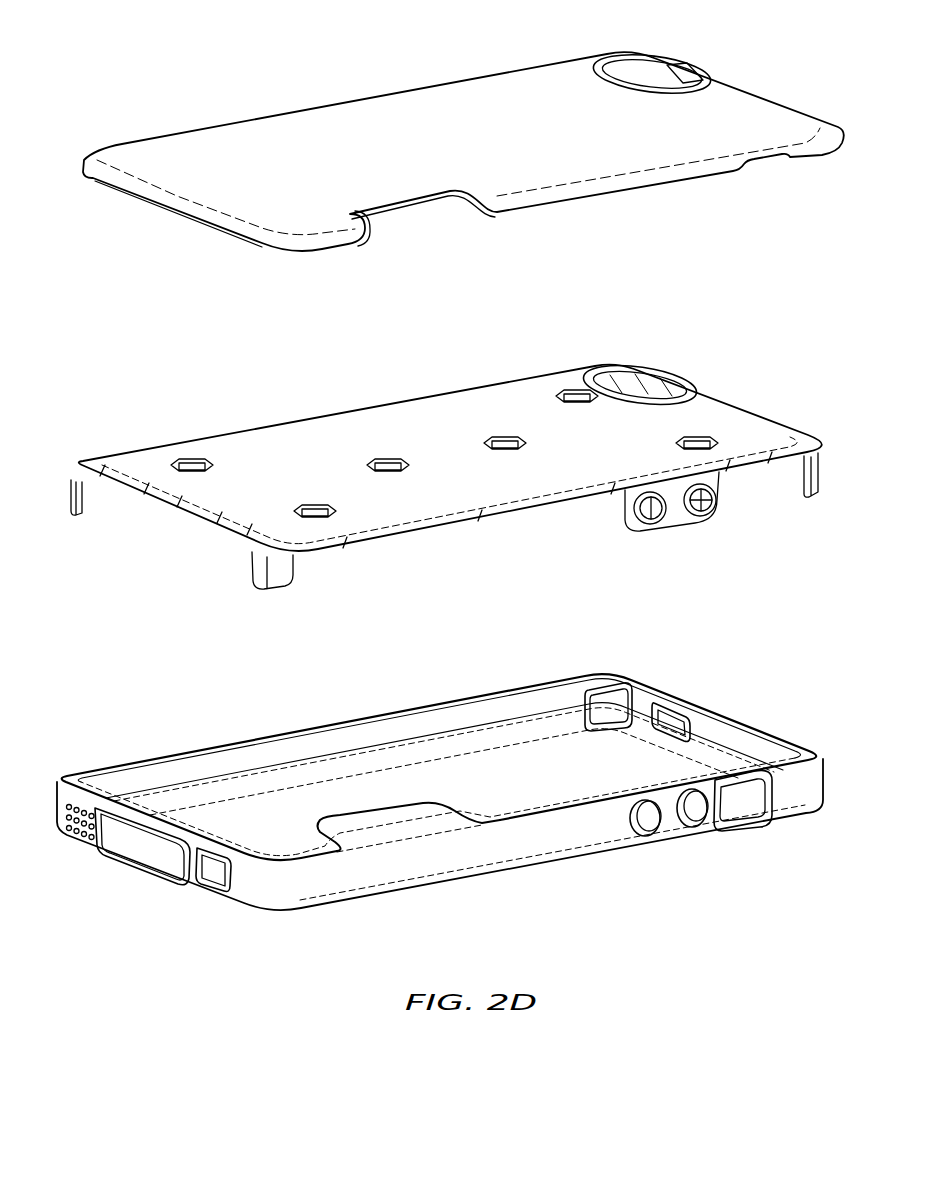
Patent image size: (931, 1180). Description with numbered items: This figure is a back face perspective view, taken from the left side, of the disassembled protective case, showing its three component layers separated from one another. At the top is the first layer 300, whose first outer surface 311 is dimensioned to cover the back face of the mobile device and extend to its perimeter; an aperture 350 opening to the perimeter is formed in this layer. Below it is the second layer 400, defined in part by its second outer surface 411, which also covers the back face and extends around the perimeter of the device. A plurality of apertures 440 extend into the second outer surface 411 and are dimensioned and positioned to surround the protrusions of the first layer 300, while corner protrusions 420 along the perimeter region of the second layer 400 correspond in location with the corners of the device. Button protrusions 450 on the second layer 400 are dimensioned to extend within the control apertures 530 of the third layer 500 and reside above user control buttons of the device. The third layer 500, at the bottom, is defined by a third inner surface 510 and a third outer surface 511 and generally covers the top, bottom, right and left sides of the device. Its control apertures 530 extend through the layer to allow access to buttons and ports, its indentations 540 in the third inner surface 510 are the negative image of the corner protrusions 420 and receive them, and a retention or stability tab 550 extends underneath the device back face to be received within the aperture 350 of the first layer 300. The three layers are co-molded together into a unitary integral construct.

The first layer 300 is at (278, 81).
The first outer surface 311 is at (503, 97).
The aperture 350 is at (412, 212).
The second layer 400 is at (318, 389).
The second outer surface 411 is at (447, 418).
The corner protrusions 420 is at (74, 516).
The apertures 440 is at (192, 458).
The button protrusions 450 is at (672, 510).
The third layer 500 is at (222, 711).
The third inner surface 510 is at (465, 728).
The third outer surface 511 is at (561, 833).
The control apertures 530 is at (672, 718).
The indentations 540 is at (607, 702).
The retention or stability tab 550 is at (381, 820).